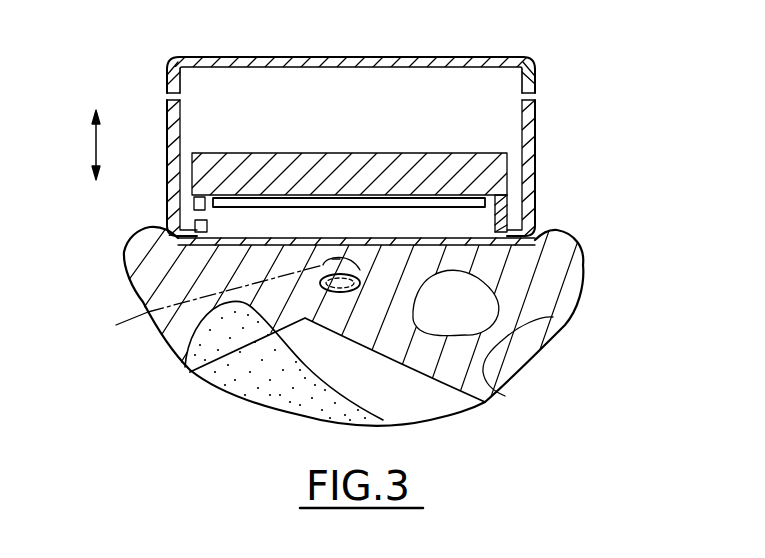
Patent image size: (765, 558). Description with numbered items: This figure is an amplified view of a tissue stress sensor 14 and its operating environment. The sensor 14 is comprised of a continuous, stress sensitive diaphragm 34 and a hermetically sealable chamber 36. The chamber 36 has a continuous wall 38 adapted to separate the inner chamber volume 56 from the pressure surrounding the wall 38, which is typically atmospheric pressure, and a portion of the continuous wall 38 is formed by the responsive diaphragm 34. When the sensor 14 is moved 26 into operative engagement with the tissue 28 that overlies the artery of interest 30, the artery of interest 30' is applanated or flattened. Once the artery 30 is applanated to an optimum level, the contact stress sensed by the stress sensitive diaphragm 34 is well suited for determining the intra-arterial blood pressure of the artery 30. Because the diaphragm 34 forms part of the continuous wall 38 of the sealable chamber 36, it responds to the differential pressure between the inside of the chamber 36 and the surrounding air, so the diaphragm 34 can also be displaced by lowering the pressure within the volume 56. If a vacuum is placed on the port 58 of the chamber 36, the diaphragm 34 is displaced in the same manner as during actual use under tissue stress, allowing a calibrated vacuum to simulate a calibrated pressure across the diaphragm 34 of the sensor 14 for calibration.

The sensor 14 is at (555, 177).
The movement of sensor 26 is at (96, 141).
The tissue 28 is at (250, 240).
The artery of interest 30 is at (213, 298).
The applanated artery of interest 30' is at (241, 361).
The stress sensitive diaphragm 34 is at (345, 238).
The hermetically sealable chamber 36 is at (148, 48).
The continuous wall 38 is at (405, 58).
The inner chamber volume 56 is at (423, 124).
The port 58 is at (168, 116).